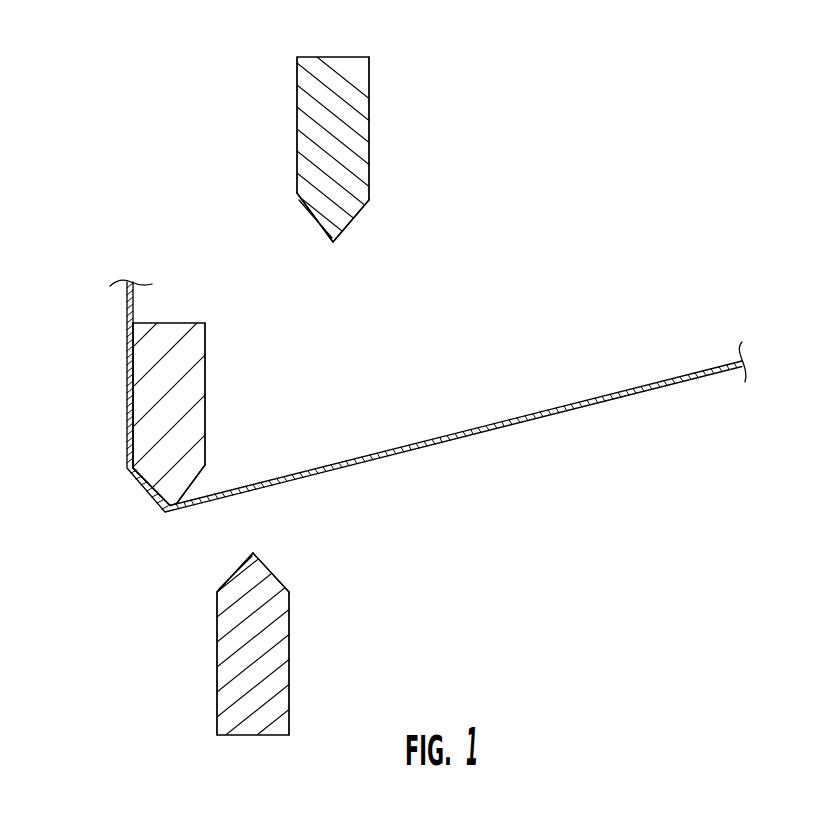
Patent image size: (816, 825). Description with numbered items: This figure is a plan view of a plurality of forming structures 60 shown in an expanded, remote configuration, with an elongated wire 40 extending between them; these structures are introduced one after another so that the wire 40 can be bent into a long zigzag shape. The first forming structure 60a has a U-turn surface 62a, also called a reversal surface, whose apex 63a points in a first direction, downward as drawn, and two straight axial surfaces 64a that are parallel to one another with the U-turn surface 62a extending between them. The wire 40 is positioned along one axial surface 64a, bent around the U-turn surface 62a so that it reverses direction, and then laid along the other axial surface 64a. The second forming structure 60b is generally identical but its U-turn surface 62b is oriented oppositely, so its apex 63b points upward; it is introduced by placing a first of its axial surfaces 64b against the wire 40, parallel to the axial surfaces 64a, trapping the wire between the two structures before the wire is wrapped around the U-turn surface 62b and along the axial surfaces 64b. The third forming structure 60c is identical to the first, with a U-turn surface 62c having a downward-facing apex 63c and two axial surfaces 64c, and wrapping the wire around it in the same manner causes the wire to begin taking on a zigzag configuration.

The wire 40 is at (127, 321).
The forming structures 60 is at (82, 584).
The first forming structure 60a is at (163, 323).
The second forming structure 60b is at (250, 735).
The third forming structure 60c is at (332, 57).
The U-turn surface 62a is at (192, 483).
The U-turn surface 62b is at (277, 577).
The U-turn surface 62c is at (357, 216).
The apex 63a is at (167, 513).
The apex 63b is at (254, 552).
The apex 63c is at (334, 241).
The axial surfaces 64a is at (127, 418).
The axial surfaces 64b is at (217, 655).
The axial surfaces 64c is at (297, 152).